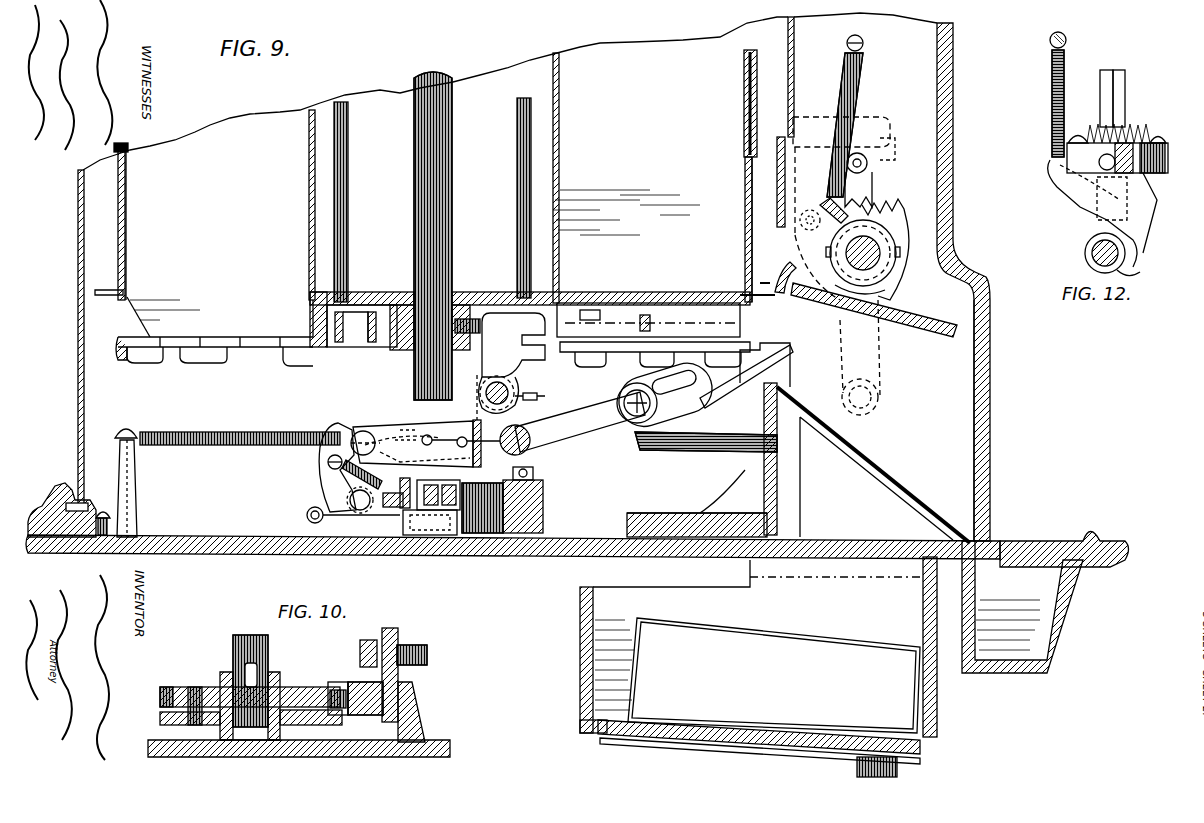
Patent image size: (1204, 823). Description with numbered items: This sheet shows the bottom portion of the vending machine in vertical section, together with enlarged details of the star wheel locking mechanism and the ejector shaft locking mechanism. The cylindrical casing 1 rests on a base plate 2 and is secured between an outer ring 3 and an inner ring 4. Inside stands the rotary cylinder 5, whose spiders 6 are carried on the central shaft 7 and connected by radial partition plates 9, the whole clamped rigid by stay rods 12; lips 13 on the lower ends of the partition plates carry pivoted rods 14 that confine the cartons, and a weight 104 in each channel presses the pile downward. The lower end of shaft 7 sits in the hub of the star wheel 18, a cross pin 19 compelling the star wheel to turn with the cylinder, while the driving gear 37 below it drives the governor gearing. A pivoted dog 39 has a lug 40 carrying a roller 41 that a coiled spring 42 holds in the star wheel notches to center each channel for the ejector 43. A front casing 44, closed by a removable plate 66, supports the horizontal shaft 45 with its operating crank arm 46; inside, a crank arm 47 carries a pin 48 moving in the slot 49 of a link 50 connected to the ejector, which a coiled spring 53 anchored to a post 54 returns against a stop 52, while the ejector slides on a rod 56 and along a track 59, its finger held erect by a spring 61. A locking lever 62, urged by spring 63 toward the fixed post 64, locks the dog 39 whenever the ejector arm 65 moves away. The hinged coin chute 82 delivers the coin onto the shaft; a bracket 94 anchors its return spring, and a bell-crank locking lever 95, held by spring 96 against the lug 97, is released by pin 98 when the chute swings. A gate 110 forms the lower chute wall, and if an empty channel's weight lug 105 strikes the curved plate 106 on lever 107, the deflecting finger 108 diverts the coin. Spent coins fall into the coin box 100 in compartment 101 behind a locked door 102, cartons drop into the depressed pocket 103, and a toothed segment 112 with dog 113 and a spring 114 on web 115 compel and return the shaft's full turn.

In FIG. 9, the cylindrical casing 1 is at (78, 414).
In FIG. 9, the base plate 2 is at (513, 537).
In FIG. 9, the outer ring 3 is at (62, 510).
In FIG. 9, the inner ring 4 is at (100, 537).
In FIG. 9, the rotary cylinder 5 is at (268, 350).
In FIG. 9, the spiders 6 is at (398, 292).
In FIG. 9, the central shaft 7 is at (452, 230).
In FIG. 10, the central shaft 7 is at (250, 640).
In FIG. 9, the partition plates 9 is at (572, 155).
In FIG. 9, the stay rods 12 is at (348, 210).
In FIG. 9, the lips 13 is at (128, 248).
In FIG. 9, the rods 14 is at (128, 152).
In FIG. 10, the star wheel 18 is at (220, 690).
In FIG. 10, the cross pin 19 is at (258, 672).
In FIG. 10, the driving gear 37 is at (160, 718).
In FIG. 9, the centering dog 39 is at (320, 468).
In FIG. 9, the lug 40 is at (438, 500).
In FIG. 10, the lug 40 is at (361, 689).
In FIG. 9, the roller 41 is at (460, 478).
In FIG. 10, the roller 41 is at (328, 690).
In FIG. 9, the coiled spring 42 is at (307, 515).
In FIG. 9, the ejector 43 is at (512, 363).
In FIG. 9, the front casing 44 is at (990, 296).
In FIG. 9, the horizontal shaft 45 is at (896, 258).
In FIG. 12, the horizontal shaft 45 is at (1092, 243).
In FIG. 9, the operating crank arm 46 is at (880, 366).
In FIG. 9, the crank arm 47 is at (735, 392).
In FIG. 9, the screw or pin 48 is at (622, 395).
In FIG. 9, the slot 49 is at (660, 378).
In FIG. 9, the link 50 is at (580, 422).
In FIG. 9, the stop 52 is at (470, 421).
In FIG. 9, the coiled spring 53 is at (240, 428).
In FIG. 9, the post 54 is at (137, 482).
In FIG. 9, the rod 56 is at (706, 452).
In FIG. 9, the flange or track 59 is at (697, 503).
In FIG. 9, the coiled spring 61 is at (540, 397).
In FIG. 9, the locking lever 62 is at (366, 432).
In FIG. 10, the locking lever 62 is at (405, 648).
In FIG. 9, the coiled spring 63 is at (368, 472).
In FIG. 9, the fixed post 64 is at (395, 497).
In FIG. 10, the fixed post 64 is at (422, 712).
In FIG. 9, the arm 65 is at (425, 433).
In FIG. 10, the arm 65 is at (360, 650).
In FIG. 9, the removable plate 66 is at (953, 196).
In FIG. 12, the coin chute 82 is at (1095, 98).
In FIG. 12, the fixed bracket 94 is at (1160, 173).
In FIG. 12, the bell-crank locking lever 95 is at (1065, 188).
In FIG. 12, the spring 96 is at (1052, 100).
In FIG. 12, the lug 97 is at (1136, 274).
In FIG. 12, the pin 98 is at (1100, 180).
In FIG. 9, the coin box 100 is at (640, 678).
In FIG. 9, the compartment 101 is at (580, 645).
In FIG. 9, the locked door 102 is at (722, 740).
In FIG. 9, the depressed pocket 103 is at (1045, 603).
In FIG. 9, the weight 104 is at (660, 320).
In FIG. 9, the lug 105 is at (768, 276).
In FIG. 9, the curved plate 106 is at (790, 263).
In FIG. 9, the lever 107 is at (880, 118).
In FIG. 9, the deflecting finger 108 is at (883, 151).
In FIG. 12, the gate 110 is at (1125, 100).
In FIG. 9, the toothed segment 112 is at (905, 224).
In FIG. 9, the double acting spring held dog 113 is at (873, 188).
In FIG. 9, the spring 114 is at (846, 80).
In FIG. 9, the web 115 is at (826, 226).